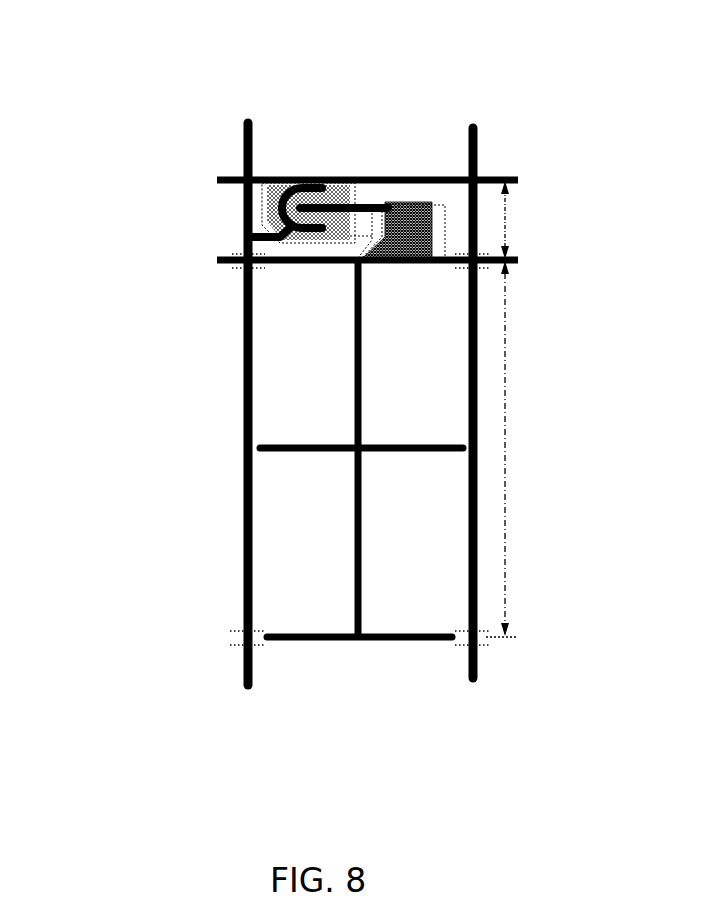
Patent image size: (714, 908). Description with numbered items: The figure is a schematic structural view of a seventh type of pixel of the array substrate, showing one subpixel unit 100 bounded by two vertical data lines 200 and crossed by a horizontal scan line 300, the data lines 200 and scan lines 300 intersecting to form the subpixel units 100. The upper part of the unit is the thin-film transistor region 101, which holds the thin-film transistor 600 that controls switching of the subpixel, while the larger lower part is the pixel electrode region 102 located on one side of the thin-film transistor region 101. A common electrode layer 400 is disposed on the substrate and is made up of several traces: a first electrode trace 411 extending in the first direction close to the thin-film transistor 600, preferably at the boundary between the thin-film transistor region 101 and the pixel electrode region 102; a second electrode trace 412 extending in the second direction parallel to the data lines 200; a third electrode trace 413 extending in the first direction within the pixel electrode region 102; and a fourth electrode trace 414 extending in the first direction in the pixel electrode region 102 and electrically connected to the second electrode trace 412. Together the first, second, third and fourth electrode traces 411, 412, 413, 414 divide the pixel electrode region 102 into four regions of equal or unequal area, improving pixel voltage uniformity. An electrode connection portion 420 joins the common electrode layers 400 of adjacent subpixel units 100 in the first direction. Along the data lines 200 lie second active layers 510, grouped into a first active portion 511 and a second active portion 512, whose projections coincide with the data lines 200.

The subpixel unit 100 is at (603, 38).
The thin-film transistor region 101 is at (528, 220).
The pixel electrode region 102 is at (520, 448).
The data line 200 is at (253, 138).
The scan line 300 is at (230, 176).
The common electrode layer 400 is at (115, 383).
The first electrode trace 411 is at (295, 265).
The second electrode trace 412 is at (356, 352).
The third electrode trace 413 is at (298, 452).
The fourth electrode trace 414 is at (312, 632).
The electrode connection portion 420 is at (222, 266).
The second active layer 510 is at (315, 500).
The first active portion 511 is at (233, 252).
The second active portion 512 is at (233, 641).
The thin-film transistor 600 is at (372, 178).